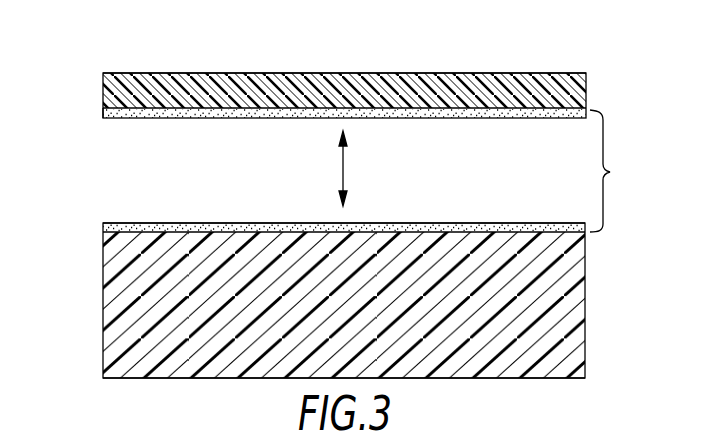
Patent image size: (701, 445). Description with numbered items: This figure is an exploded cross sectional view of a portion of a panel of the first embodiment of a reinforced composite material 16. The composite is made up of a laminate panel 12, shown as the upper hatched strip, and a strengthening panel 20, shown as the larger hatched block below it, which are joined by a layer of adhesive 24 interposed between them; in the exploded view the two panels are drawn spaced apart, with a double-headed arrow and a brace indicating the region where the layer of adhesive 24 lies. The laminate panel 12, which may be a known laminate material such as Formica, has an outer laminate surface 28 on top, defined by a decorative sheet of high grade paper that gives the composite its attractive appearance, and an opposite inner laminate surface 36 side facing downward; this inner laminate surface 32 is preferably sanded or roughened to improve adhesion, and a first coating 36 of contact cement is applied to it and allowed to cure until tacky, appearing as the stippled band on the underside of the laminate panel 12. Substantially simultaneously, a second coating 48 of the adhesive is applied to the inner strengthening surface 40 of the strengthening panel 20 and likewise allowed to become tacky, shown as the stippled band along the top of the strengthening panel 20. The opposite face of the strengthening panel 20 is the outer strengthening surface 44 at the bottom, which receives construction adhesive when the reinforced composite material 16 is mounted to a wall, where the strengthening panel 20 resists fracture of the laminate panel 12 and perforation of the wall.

The laminate panel 12 is at (152, 73).
The reinforced composite material 16 is at (590, 78).
The strengthening panel 20 is at (101, 287).
The layer of adhesive 24 is at (488, 171).
The outer laminate surface 28 is at (232, 73).
The inner laminate surface 32 is at (275, 118).
The first coating 36 is at (103, 113).
The inner strengthening surface 40 is at (233, 229).
The outer strengthening surface 44 is at (170, 378).
The second coating 48 is at (103, 225).